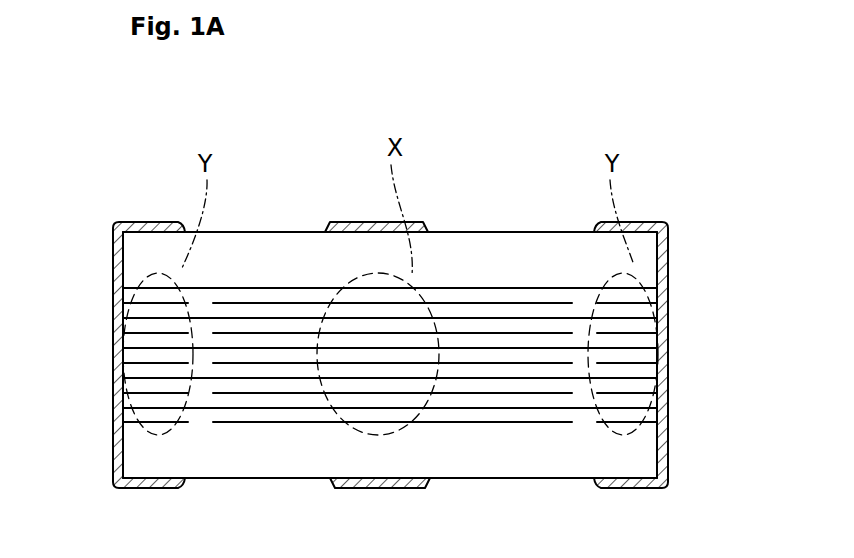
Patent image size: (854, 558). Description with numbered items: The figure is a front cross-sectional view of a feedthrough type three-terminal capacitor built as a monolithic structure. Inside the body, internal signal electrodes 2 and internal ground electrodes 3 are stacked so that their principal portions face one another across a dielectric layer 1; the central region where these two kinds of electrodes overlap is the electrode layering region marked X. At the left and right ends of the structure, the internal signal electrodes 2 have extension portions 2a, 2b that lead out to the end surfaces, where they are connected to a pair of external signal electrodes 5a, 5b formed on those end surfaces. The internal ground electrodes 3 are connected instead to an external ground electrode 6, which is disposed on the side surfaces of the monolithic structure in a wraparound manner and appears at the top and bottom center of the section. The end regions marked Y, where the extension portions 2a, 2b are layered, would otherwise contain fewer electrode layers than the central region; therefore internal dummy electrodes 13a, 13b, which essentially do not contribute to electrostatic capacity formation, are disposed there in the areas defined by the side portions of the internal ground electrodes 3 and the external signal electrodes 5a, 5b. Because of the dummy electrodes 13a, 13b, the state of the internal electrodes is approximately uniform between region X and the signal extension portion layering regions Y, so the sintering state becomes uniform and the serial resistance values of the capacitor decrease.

The dielectric layer 1 is at (537, 340).
The internal signal electrodes 2 is at (273, 318).
The extension portion of internal signal electrode 2a is at (148, 348).
The extension portion of internal signal electrode 2b is at (652, 349).
The internal ground electrodes 3 is at (503, 393).
The external signal electrode 5a is at (142, 221).
The external signal electrode 5b is at (670, 240).
The external ground electrode 6 is at (365, 222).
The internal dummy electrode 13a is at (140, 345).
The internal dummy electrode 13b is at (634, 360).